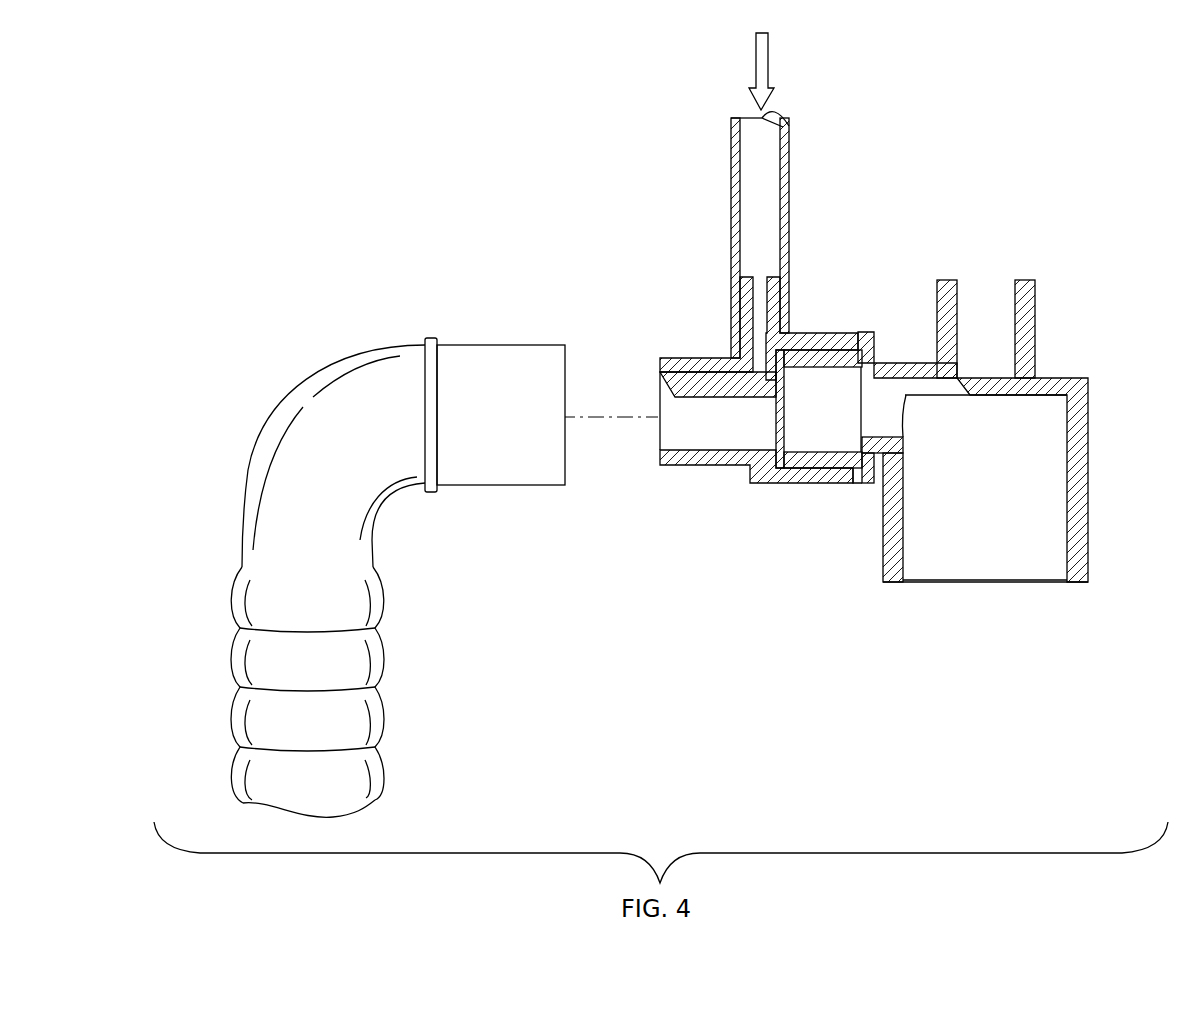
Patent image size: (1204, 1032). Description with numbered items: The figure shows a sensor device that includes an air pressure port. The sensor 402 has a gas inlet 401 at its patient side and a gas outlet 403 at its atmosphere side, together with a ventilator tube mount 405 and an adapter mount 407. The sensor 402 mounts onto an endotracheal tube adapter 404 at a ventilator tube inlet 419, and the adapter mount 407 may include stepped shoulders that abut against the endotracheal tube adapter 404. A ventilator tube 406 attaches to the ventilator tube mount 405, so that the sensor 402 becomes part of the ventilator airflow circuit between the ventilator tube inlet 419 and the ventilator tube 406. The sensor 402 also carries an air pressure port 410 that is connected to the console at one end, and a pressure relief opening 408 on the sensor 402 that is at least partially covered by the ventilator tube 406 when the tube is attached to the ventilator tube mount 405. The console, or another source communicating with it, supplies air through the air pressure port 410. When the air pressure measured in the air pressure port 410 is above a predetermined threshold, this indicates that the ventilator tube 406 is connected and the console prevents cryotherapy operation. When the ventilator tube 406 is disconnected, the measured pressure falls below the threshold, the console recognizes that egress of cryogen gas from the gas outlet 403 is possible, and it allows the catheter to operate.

The gas inlet 401 is at (784, 417).
The sensor 402 is at (807, 333).
The gas outlet 403 is at (660, 428).
The endotracheal tube adapter 404 is at (1088, 498).
The ventilator tube mount 405 is at (693, 467).
The ventilator tube 406 is at (255, 468).
The adapter mount 407 is at (822, 483).
The pressure relief opening 408 is at (690, 358).
The air pressure port 410 is at (731, 182).
The ventilator tube inlet 419 is at (858, 340).